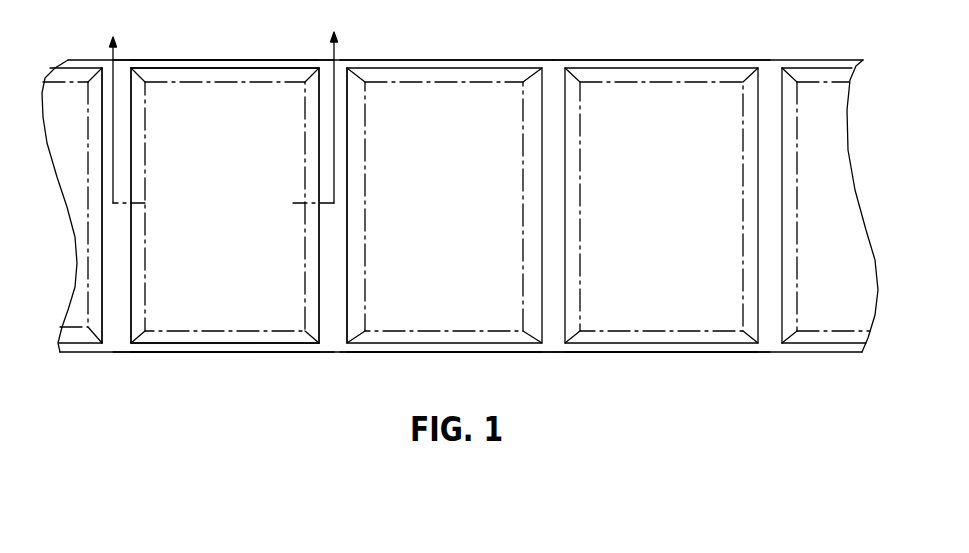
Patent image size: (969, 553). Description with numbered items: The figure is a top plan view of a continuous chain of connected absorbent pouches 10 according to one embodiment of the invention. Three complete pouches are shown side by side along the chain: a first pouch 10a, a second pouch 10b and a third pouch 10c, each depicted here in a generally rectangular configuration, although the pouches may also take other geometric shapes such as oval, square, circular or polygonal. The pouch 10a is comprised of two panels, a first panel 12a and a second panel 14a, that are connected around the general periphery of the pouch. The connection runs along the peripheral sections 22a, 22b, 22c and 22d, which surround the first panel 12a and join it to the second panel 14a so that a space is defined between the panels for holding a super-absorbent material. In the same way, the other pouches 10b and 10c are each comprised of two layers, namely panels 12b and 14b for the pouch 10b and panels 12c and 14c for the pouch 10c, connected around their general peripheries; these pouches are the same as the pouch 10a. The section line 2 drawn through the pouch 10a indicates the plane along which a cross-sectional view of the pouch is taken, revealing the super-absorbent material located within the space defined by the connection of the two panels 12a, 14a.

The section line 2- 2 is at (223, 102).
The continuous chain of connected absorbent pouches 10 is at (118, 400).
The pouch 10a is at (285, 56).
The pouch 10b is at (407, 56).
The pouch 10c is at (633, 56).
The first panel 12a is at (187, 217).
The panel 12b is at (417, 217).
The panel 12c is at (637, 217).
The second panel 14a is at (240, 355).
The panel 14b is at (490, 359).
The panel 14c is at (700, 359).
The section 22a is at (333, 334).
The section 22b is at (208, 62).
The section 22c is at (117, 334).
The section 22d is at (265, 349).